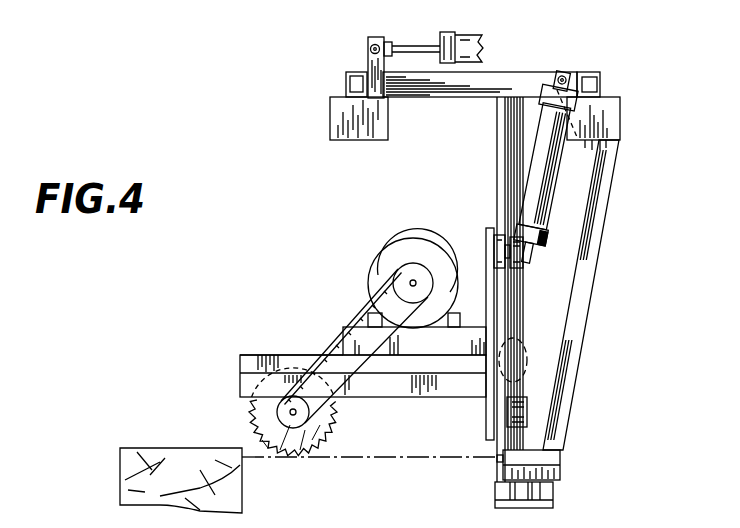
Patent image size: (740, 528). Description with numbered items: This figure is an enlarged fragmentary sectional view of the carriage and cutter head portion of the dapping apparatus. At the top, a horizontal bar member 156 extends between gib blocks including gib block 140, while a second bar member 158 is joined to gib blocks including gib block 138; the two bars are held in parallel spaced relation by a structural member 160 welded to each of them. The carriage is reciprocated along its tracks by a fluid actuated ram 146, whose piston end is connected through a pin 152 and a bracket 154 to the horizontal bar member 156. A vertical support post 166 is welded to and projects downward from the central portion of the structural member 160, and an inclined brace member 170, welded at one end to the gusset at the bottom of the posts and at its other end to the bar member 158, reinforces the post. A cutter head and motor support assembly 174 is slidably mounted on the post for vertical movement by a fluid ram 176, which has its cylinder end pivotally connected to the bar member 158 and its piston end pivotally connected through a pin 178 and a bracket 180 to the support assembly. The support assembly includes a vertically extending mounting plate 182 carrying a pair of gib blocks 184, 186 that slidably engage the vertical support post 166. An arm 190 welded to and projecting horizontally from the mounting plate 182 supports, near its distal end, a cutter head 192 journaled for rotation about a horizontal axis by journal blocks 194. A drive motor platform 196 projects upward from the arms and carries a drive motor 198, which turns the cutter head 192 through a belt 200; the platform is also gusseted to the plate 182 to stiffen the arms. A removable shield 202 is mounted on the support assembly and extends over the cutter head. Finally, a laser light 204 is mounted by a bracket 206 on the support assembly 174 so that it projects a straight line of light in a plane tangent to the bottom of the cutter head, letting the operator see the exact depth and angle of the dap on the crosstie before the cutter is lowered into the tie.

The gib block 138 is at (613, 120).
The gib block 140 is at (335, 123).
The fluid actuated ram 146 is at (473, 38).
The pin 152 is at (375, 44).
The bracket 154 is at (369, 62).
The horizontal bar member 156 is at (603, 80).
The second bar member 158 is at (345, 82).
The structural member 160 is at (507, 80).
The vertical support post 166 is at (497, 134).
The inclined brace member 170 is at (583, 302).
The cutter head and motor support assembly 174 is at (237, 375).
The fluid ram 176 is at (557, 183).
The pin 178 is at (514, 329).
The bracket 180 is at (527, 387).
The mounting plate 182 is at (485, 233).
The gib block 184 is at (518, 232).
The gib block 186 is at (527, 405).
The arm 190 is at (361, 385).
The cutter head 192 is at (302, 450).
The journal block 194 is at (252, 409).
The drive motor platform 196 is at (420, 360).
The drive motor 198 is at (390, 253).
The belt 200 is at (371, 302).
The removable shield 202 is at (285, 357).
The laser light 204 is at (560, 462).
The bracket 206 is at (492, 478).